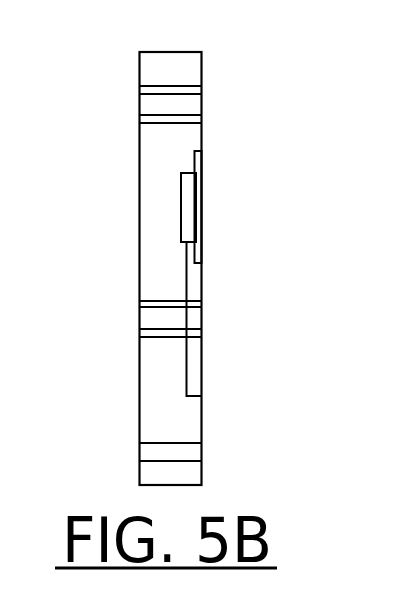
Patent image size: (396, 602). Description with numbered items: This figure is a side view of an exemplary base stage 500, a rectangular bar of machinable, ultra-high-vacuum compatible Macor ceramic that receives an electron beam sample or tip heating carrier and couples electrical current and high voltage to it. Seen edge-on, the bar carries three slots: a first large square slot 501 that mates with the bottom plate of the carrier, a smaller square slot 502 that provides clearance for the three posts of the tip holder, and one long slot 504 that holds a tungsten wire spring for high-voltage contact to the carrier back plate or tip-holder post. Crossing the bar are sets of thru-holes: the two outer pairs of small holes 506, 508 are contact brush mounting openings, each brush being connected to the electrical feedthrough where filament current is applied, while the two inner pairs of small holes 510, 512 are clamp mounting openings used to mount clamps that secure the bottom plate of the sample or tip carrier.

The base stage 500 is at (197, 35).
The first large square slot 501 is at (200, 224).
The smaller square slot 502 is at (179, 193).
The long slot 504 is at (185, 393).
The contact brush mounting openings 506 is at (203, 85).
The contact brush mounting openings 508 is at (203, 338).
The clamp mounting openings 510 is at (203, 298).
The clamp mounting openings 512 is at (203, 117).